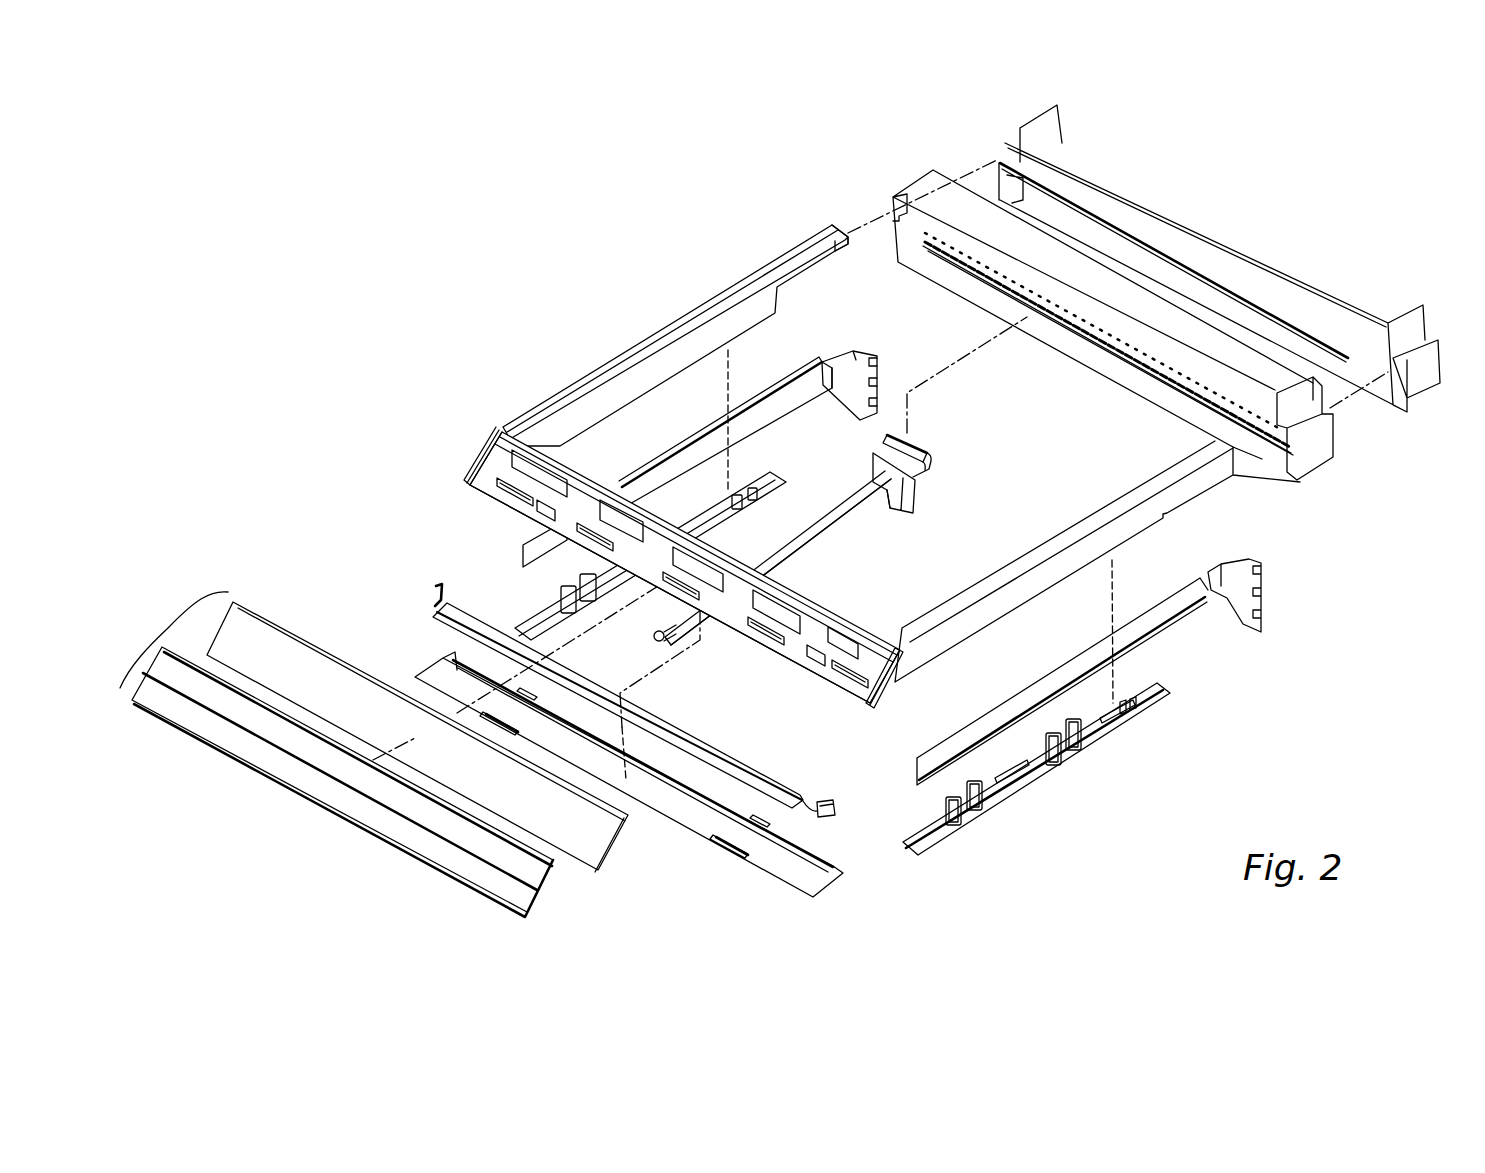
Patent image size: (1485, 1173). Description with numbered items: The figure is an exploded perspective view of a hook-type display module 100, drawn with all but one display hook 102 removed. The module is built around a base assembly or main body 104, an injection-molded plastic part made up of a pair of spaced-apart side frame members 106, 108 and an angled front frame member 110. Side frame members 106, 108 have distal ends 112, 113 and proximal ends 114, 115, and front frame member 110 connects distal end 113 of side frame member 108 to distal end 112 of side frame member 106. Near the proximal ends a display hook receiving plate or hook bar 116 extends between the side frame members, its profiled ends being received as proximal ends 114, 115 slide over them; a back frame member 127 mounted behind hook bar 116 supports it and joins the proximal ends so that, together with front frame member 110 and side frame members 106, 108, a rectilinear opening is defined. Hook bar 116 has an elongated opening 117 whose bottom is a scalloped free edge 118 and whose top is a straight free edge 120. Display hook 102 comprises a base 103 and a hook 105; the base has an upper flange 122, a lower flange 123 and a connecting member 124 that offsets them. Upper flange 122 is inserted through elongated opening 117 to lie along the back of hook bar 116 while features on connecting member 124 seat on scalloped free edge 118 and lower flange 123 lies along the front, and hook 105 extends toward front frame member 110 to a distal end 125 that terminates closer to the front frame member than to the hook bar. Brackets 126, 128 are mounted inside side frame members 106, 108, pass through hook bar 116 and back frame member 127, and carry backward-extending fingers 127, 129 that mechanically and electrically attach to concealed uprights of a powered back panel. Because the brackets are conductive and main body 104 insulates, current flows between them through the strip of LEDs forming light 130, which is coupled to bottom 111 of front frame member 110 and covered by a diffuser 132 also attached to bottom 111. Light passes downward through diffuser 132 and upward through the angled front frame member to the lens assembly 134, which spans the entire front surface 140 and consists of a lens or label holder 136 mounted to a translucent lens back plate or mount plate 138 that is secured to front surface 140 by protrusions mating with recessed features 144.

The hook-type display module 100 is at (1266, 163).
The display hook 102 is at (832, 534).
The base 103 is at (920, 493).
The base assembly or main body 104 is at (656, 329).
The hook 105 is at (797, 547).
The side frame member 106 is at (1127, 527).
The side frame member 108 is at (747, 310).
The front frame member 110 is at (668, 566).
The bottom 111 is at (837, 673).
The distal end 112 is at (889, 685).
The distal end 113 is at (482, 472).
The proximal end 114 is at (1143, 342).
The proximal end 115 is at (837, 252).
The hook bar 116 is at (1323, 471).
The elongated opening 117 is at (1203, 381).
The scalloped free edge 118 is at (1063, 307).
The straight free edge 120 is at (1142, 353).
The upper flange 122 is at (907, 453).
The lower flange 123 is at (905, 500).
The connecting member 124 is at (930, 467).
The distal end 125 is at (657, 638).
The bracket 126 is at (1168, 630).
The back frame member / fingers 127 is at (1337, 279).
The bracket 128 is at (765, 405).
The fingers 129 is at (877, 400).
The light 130 is at (733, 757).
The diffuser 132 is at (778, 880).
The lens assembly 134 is at (168, 628).
The lens or label holder 136 is at (545, 888).
The lens back plate or mount plate 138 is at (617, 850).
The front surface 140 is at (567, 520).
The features 144 is at (517, 497).